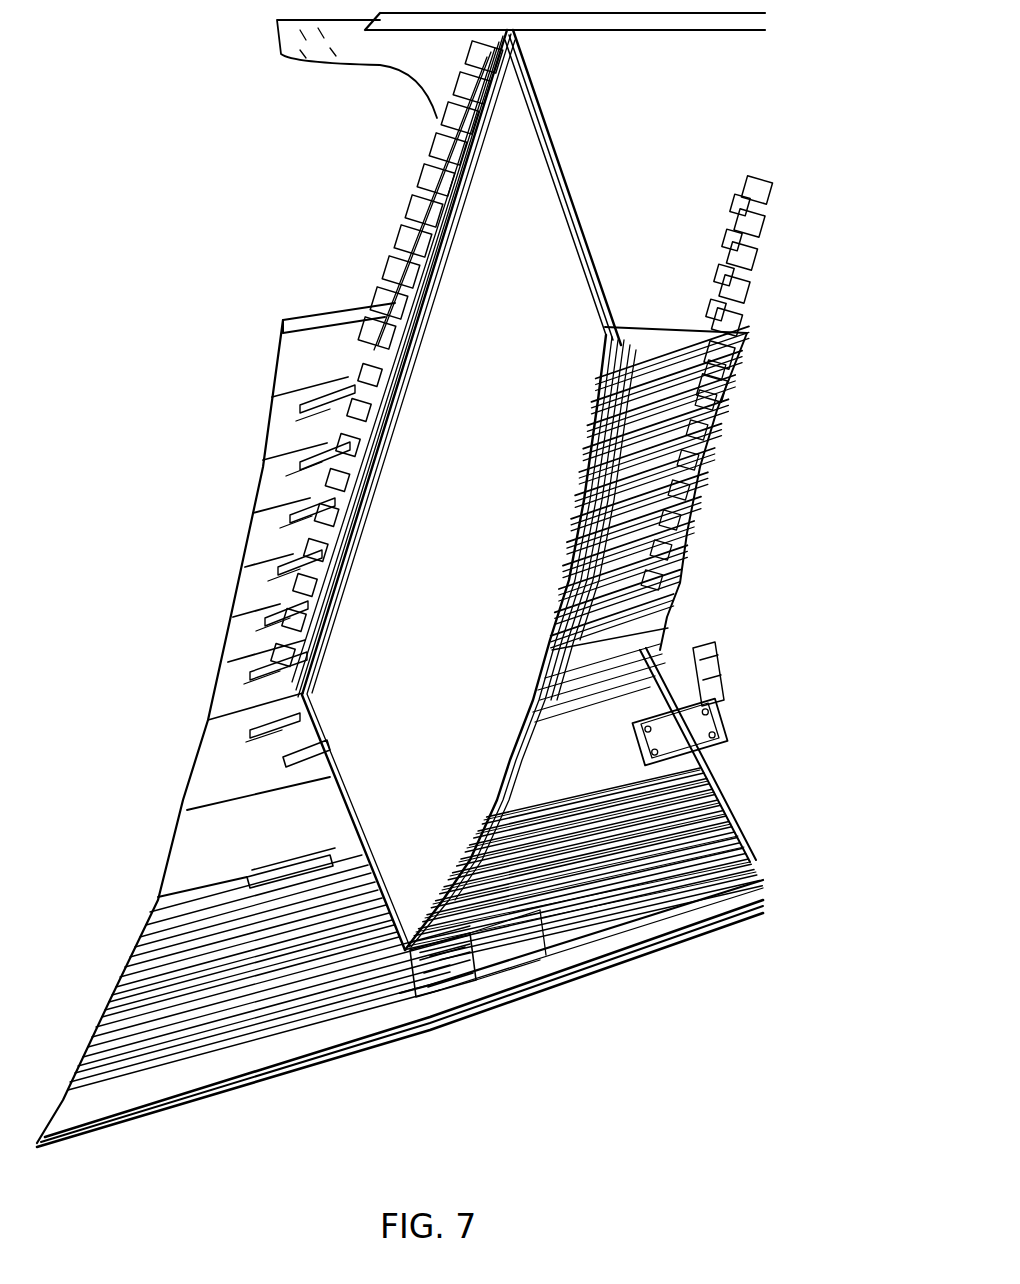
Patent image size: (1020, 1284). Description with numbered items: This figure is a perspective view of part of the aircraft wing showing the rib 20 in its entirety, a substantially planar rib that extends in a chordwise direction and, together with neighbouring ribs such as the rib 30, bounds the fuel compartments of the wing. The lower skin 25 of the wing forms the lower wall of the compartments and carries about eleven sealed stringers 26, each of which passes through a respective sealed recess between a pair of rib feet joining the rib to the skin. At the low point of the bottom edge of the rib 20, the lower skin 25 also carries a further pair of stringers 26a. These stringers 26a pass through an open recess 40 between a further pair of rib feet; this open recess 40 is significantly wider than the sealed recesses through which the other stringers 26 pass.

The rib 20 is at (346, 257).
The lower skin 25 is at (503, 990).
The sealed stringer 26 is at (312, 465).
The further pair of stringers 26a is at (287, 753).
The rib 30 is at (730, 787).
The open recess 40 is at (540, 818).